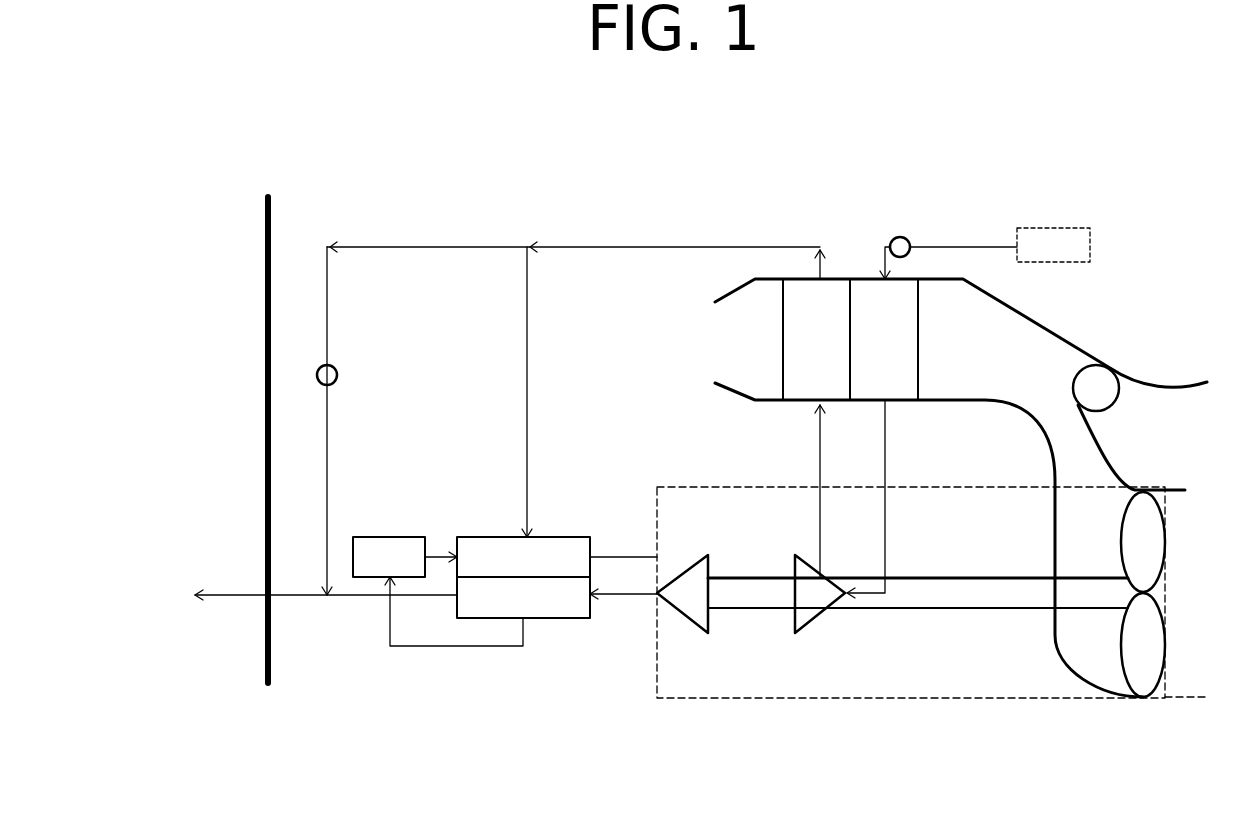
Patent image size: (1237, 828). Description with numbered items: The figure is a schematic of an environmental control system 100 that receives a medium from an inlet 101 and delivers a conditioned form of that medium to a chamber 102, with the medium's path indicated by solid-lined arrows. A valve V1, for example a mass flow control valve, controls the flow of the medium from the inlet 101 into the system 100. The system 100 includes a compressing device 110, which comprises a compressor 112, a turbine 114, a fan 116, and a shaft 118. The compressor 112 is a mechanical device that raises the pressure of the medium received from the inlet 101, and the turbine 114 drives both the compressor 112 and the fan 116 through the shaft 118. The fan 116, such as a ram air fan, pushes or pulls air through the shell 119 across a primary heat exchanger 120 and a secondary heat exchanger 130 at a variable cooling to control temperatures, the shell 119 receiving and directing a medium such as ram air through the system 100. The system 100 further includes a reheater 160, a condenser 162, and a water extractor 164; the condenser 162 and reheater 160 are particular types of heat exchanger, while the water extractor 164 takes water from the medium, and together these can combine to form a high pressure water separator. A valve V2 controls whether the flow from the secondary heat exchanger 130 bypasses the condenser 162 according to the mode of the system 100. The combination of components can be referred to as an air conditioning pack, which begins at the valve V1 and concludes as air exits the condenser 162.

The system 100 is at (1090, 86).
The inlet 101 is at (1000, 245).
The chamber 102 is at (262, 197).
The compressing device 110 is at (745, 700).
The compressor 112 is at (820, 594).
The turbine 114 is at (675, 560).
The fan 116 is at (1103, 640).
The shaft 118 is at (1005, 612).
The shell 119 is at (1097, 360).
The primary heat exchanger 120 is at (884, 339).
The secondary heat exchanger 130 is at (816, 339).
The reheater 160 is at (523, 557).
The condenser 162 is at (523, 597).
The water extractor 164 is at (438, 591).
The valve V1 is at (893, 238).
The valve V2 is at (318, 377).